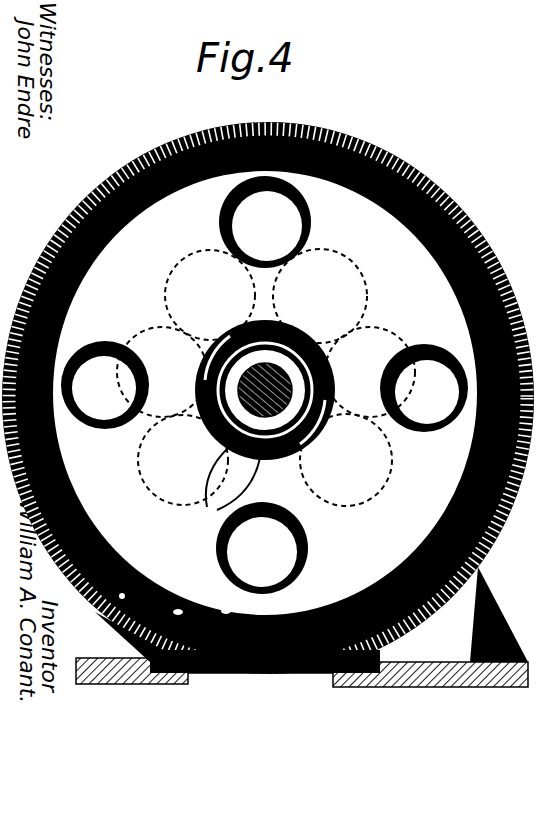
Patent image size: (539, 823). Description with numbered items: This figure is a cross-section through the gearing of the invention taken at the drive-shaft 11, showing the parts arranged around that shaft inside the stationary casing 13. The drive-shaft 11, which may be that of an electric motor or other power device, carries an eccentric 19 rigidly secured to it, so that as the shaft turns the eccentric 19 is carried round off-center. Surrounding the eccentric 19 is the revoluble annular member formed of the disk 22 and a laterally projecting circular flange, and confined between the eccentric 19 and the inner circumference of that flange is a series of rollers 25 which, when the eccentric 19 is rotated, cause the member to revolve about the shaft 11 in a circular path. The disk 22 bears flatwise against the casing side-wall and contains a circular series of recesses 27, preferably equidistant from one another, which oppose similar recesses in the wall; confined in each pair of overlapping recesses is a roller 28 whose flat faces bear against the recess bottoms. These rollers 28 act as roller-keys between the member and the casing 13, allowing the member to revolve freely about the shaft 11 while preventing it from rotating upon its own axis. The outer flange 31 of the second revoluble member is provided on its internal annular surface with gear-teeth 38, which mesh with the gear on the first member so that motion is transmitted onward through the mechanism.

The drive-shaft 11 is at (292, 418).
The stationary casing 13 is at (369, 152).
The eccentric 19 is at (314, 349).
The disk 22 is at (265, 393).
The rollers 25 is at (167, 291).
The recesses 27 is at (312, 220).
The rollers 28 is at (265, 389).
The flange 31 is at (302, 637).
The gear-teeth 38 is at (222, 605).